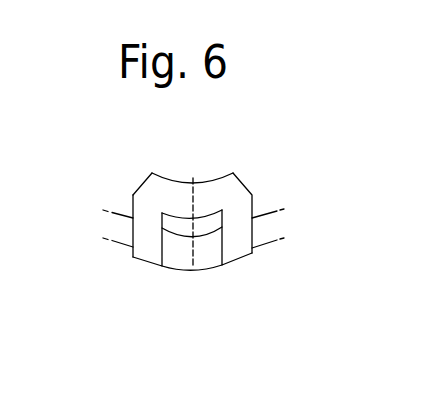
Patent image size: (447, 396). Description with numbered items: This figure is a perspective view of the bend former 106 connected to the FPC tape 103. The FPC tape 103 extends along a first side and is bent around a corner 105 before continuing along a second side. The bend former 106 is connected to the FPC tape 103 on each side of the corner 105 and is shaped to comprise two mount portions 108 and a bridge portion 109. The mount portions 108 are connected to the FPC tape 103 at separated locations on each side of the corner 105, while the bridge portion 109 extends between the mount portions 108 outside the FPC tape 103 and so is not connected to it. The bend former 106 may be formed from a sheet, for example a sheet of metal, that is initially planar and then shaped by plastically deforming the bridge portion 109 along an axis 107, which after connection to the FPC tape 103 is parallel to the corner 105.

The FPC tape 103 is at (123, 243).
The corner 105 is at (192, 253).
The bend former 106 is at (141, 211).
The axis 107 is at (193, 203).
The mount portions 108 is at (147, 255).
The bridge portion 109 is at (170, 190).